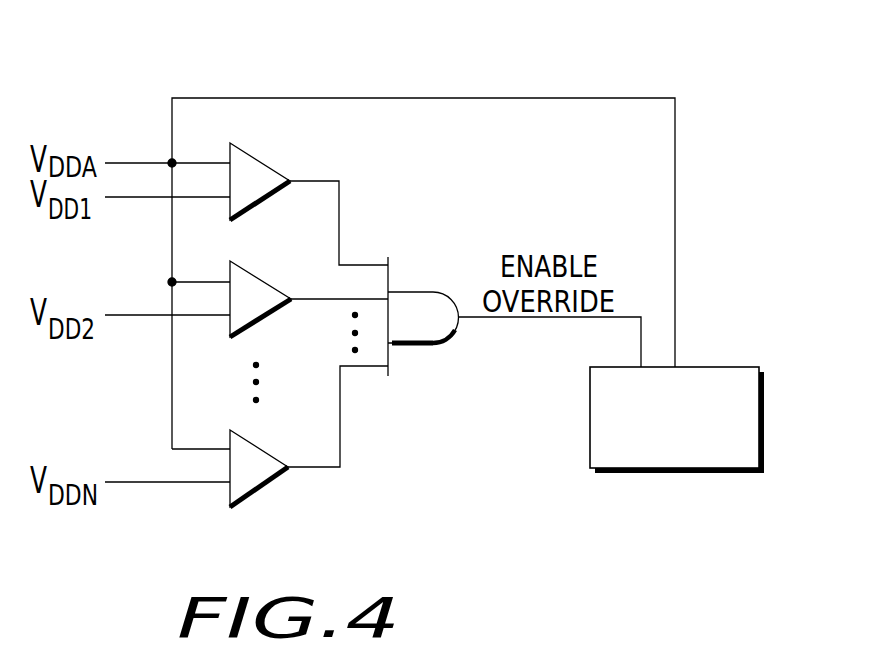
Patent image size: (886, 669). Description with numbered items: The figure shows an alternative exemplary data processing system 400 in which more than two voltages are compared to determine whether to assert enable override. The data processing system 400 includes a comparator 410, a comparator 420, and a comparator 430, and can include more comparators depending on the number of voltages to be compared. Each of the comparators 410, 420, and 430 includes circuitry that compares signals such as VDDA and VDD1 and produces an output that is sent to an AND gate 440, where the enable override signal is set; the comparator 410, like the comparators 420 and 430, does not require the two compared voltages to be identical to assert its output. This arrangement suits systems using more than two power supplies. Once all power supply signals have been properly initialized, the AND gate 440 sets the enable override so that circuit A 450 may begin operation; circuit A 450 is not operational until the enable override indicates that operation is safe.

The data processing system 400 is at (740, 58).
The comparator 410 is at (260, 157).
The comparator 420 is at (255, 275).
The comparator 430 is at (255, 445).
The AND gate 440 is at (420, 347).
The circuit A 450 is at (715, 364).